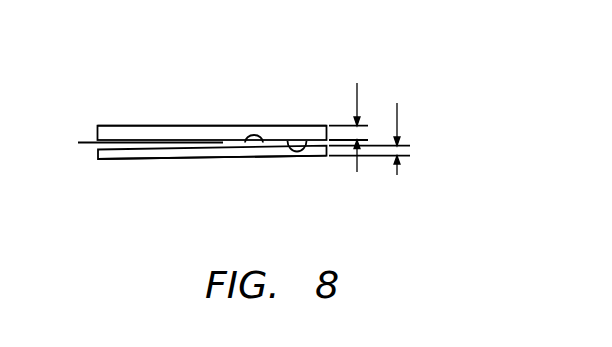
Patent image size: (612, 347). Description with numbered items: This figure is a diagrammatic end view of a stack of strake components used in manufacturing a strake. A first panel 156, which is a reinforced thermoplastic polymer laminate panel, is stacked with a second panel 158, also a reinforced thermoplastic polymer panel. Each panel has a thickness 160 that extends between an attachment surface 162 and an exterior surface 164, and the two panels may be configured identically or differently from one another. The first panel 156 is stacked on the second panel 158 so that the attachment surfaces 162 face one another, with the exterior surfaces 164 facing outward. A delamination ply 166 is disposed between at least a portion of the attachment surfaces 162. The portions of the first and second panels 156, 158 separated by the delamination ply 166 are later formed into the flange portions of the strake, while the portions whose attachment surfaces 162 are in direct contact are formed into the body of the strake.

The first panel 156 is at (237, 133).
The second panel 158 is at (307, 156).
The thickness 160 is at (357, 97).
The attachment surface 162 is at (306, 141).
The exterior surface 164 is at (122, 126).
The delamination ply 166 is at (83, 145).